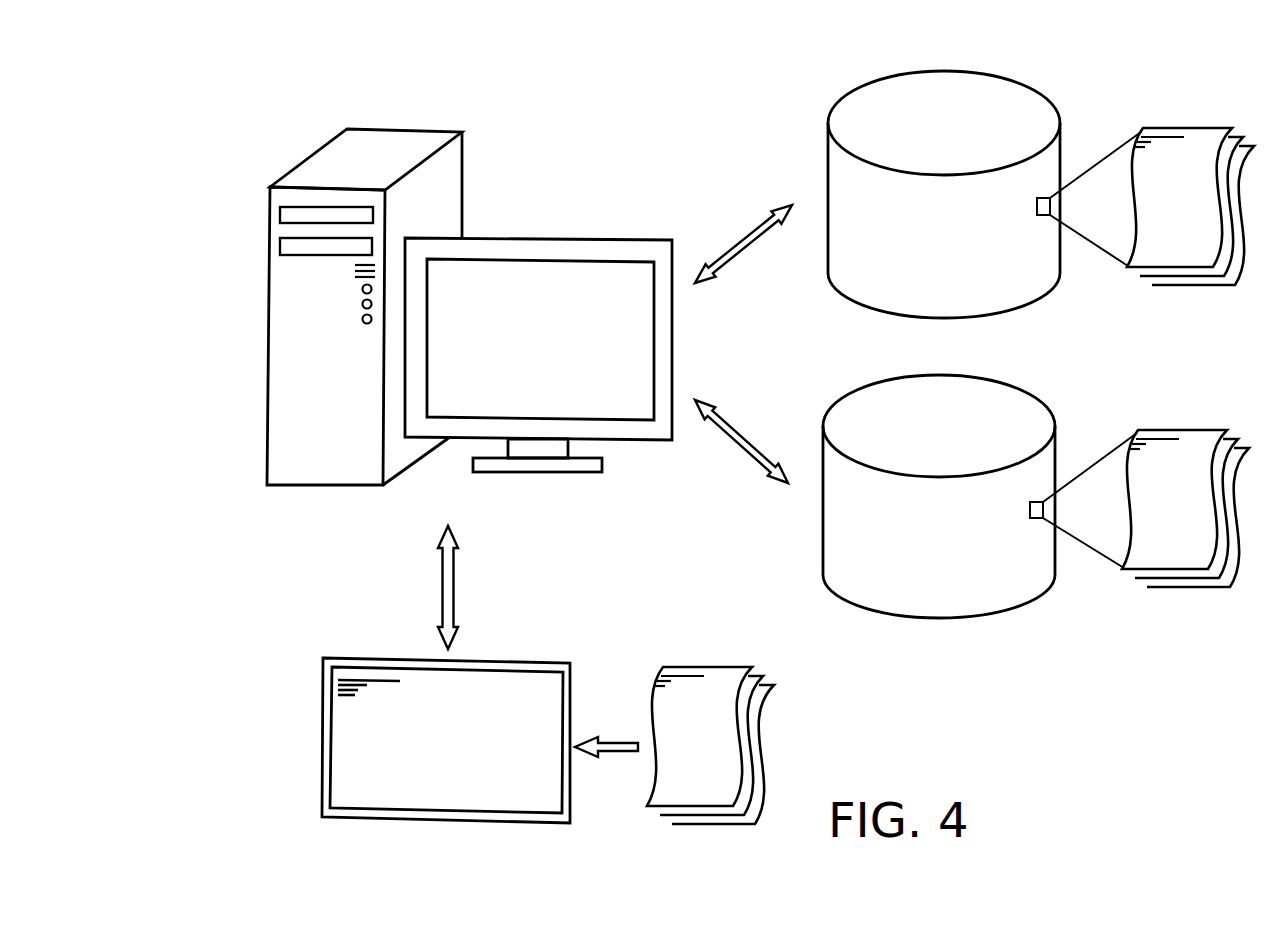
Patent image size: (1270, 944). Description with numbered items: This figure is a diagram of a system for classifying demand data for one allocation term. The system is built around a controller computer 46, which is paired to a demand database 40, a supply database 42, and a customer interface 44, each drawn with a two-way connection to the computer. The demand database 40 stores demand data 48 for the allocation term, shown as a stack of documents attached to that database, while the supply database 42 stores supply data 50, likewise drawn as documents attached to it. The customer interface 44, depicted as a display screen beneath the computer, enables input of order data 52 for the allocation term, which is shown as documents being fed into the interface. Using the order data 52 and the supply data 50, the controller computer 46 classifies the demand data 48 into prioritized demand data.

The demand database 40 is at (1030, 87).
The supply database 42 is at (1027, 390).
The customer interface 44 is at (322, 737).
The controller computer 46 is at (268, 335).
The demand data 48 is at (1186, 126).
The supply data 50 is at (1181, 428).
The order data 52 is at (706, 665).